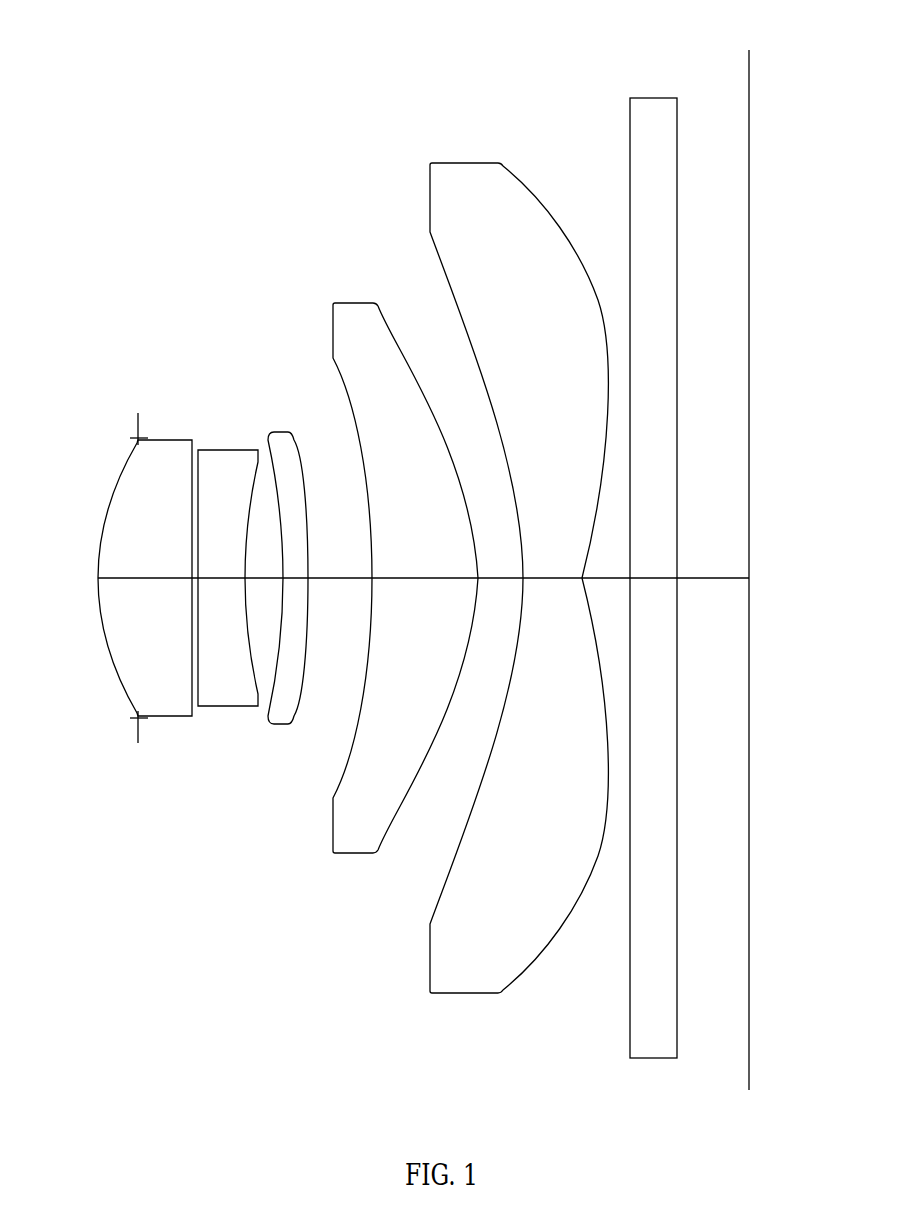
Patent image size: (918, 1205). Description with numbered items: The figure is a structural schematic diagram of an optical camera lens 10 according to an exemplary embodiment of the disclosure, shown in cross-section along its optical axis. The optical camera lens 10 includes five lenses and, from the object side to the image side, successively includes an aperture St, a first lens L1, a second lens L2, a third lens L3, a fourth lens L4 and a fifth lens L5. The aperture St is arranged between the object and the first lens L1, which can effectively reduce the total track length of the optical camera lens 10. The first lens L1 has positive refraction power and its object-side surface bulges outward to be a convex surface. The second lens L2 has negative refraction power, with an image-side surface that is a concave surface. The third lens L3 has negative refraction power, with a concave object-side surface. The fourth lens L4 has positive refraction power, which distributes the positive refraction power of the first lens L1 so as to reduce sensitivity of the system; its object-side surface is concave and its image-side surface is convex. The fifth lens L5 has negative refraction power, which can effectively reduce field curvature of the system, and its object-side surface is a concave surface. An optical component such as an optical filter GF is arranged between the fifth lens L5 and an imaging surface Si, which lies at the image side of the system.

The optical camera lens 10 is at (423, 336).
The aperture St is at (125, 567).
The first lens L1 is at (145, 550).
The second lens L2 is at (228, 552).
The third lens L3 is at (287, 554).
The fourth lens L4 is at (405, 553).
The fifth lens L5 is at (519, 553).
The optical filter GF is at (653, 555).
The imaging surface Si is at (750, 547).